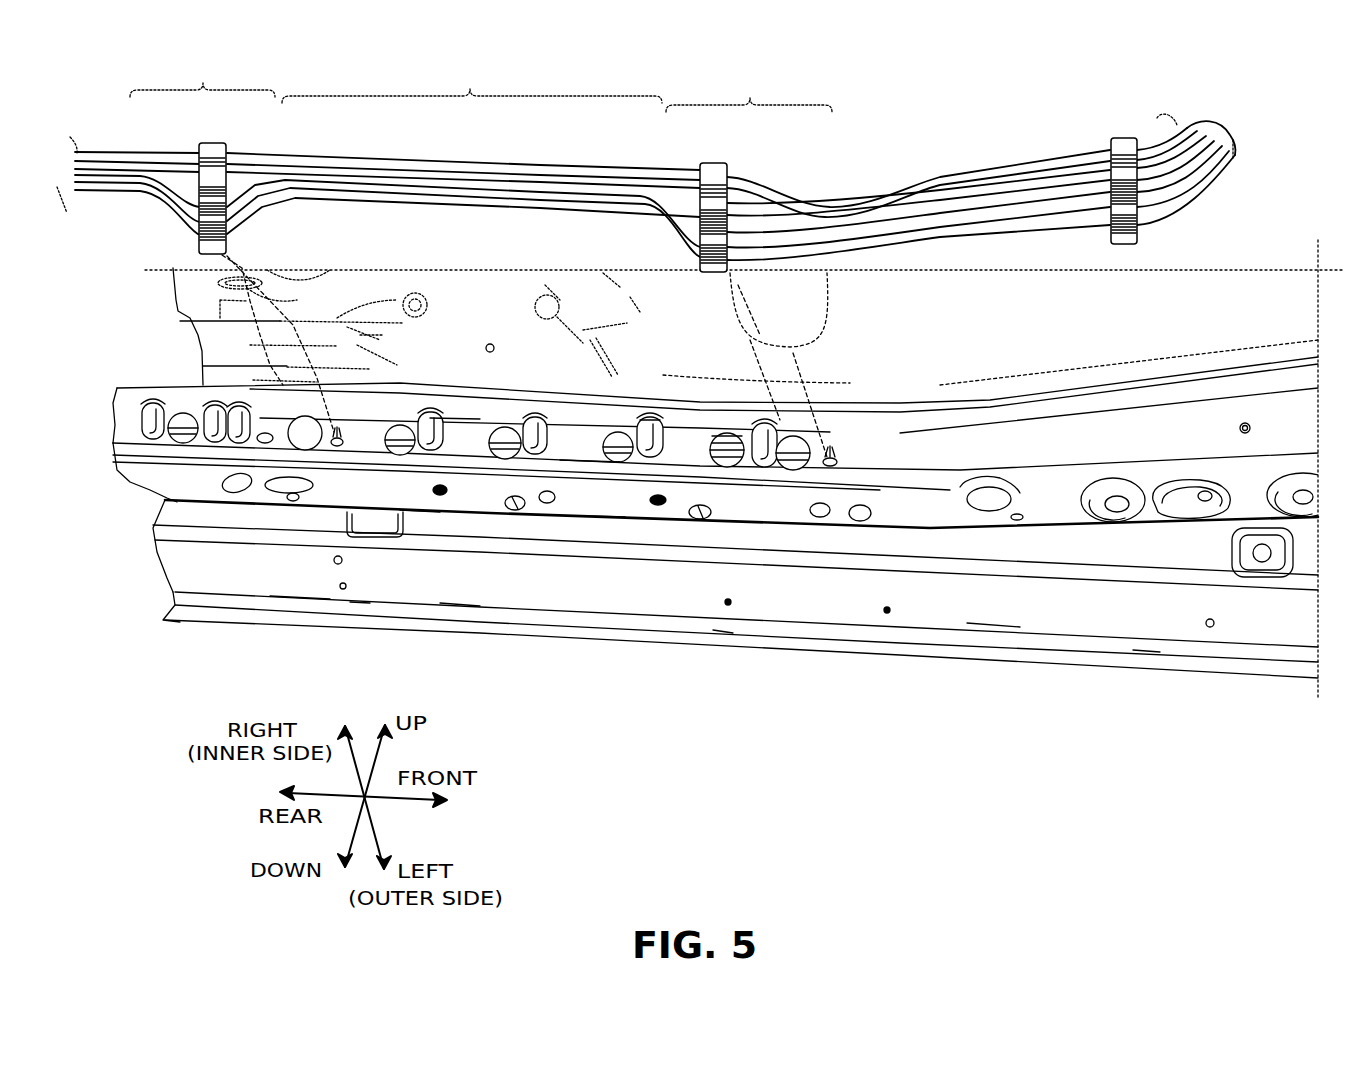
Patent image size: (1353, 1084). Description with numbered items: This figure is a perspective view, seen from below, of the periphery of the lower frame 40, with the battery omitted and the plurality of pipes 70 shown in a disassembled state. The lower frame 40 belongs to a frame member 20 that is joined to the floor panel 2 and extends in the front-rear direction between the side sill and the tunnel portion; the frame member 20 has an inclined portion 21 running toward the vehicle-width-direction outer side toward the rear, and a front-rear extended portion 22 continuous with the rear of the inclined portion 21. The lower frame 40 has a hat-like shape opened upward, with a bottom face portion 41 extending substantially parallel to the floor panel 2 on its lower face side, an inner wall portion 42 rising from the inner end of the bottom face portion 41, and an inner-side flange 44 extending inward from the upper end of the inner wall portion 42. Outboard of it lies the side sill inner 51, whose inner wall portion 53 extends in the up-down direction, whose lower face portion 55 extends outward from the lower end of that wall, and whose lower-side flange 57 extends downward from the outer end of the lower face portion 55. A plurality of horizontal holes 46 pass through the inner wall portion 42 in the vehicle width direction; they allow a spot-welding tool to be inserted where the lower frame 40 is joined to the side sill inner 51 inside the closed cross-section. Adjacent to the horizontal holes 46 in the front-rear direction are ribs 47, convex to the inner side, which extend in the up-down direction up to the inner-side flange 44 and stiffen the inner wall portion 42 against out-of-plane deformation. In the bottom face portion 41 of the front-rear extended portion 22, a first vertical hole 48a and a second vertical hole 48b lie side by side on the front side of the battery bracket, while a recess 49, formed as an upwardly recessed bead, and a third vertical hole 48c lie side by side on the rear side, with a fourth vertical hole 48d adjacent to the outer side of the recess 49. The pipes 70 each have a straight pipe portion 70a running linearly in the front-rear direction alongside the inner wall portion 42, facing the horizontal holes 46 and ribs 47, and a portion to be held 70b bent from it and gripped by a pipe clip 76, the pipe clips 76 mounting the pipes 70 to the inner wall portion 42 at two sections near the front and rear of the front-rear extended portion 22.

The floor panel 2 is at (962, 293).
The frame member 20 is at (741, 628).
The inclined portion 21 is at (1063, 518).
The front-rear extended portion 22 is at (740, 496).
The lower frame 40 is at (418, 490).
The bottom face portion 41 is at (602, 497).
The inner wall portion 42 is at (587, 443).
The inner-side flange 44 is at (452, 410).
The horizontal hole 46 is at (723, 443).
The rib 47 is at (630, 428).
The first vertical hole 48a is at (855, 514).
The second vertical hole 48b is at (820, 510).
The third vertical hole 48c is at (237, 494).
The fourth vertical hole 48d is at (295, 497).
The recess 49 is at (318, 493).
The side sill inner 51 is at (149, 609).
The inner wall portion 53 is at (158, 500).
The lower face portion 55 is at (293, 583).
The lower-side flange 57 is at (168, 580).
The pipe 70 is at (920, 147).
The straight pipe portion 70a is at (472, 76).
The portion to be held 70b is at (481, 75).
The pipe clip 76 is at (212, 147).